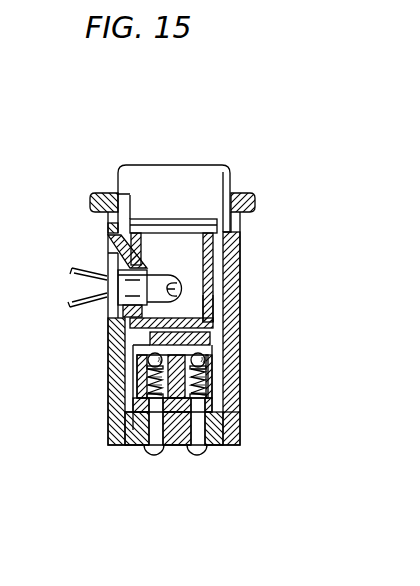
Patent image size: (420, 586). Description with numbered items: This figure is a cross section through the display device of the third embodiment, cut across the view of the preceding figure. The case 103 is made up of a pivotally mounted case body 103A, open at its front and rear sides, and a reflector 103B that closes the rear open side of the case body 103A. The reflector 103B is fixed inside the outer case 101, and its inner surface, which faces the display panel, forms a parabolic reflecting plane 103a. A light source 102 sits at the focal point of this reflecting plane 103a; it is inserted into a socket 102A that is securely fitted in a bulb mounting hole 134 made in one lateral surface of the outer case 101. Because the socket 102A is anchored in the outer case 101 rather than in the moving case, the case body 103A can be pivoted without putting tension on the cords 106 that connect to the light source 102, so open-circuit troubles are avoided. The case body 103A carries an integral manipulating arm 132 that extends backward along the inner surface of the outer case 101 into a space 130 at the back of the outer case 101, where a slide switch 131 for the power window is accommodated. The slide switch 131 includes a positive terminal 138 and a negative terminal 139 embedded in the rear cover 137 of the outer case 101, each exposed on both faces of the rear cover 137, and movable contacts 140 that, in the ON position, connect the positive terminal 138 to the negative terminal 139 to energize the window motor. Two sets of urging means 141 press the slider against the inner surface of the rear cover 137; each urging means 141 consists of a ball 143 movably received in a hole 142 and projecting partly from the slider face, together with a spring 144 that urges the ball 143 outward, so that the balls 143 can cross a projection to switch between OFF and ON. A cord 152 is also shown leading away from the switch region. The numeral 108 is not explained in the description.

The outer case 101 is at (102, 350).
The light source 102 is at (183, 290).
The socket 102A is at (110, 289).
The case 103 is at (235, 112).
The case body 103A is at (148, 165).
The reflector 103B is at (205, 219).
The parabolic reflecting plane 103a is at (213, 300).
The cords 106 is at (74, 270).
The flange 108 is at (110, 230).
The space 130 is at (226, 406).
The slide switch 131 is at (241, 412).
The manipulating arm 132 is at (213, 323).
The bulb mounting hole 134 is at (107, 322).
The rear cover 137 is at (217, 447).
The positive terminal 138 is at (140, 445).
The negative terminal 139 is at (177, 445).
The movable contacts 140 is at (135, 445).
The urging means 141 is at (57, 383).
The hole 142 is at (143, 400).
The ball 143 is at (147, 360).
The spring 144 is at (145, 382).
The cord 152 is at (139, 450).